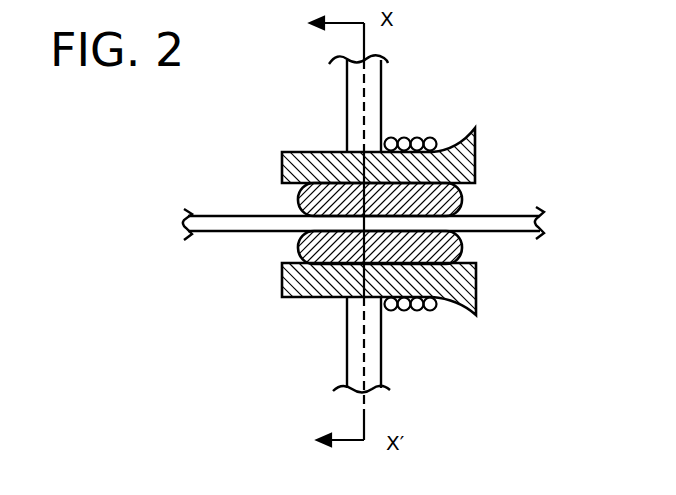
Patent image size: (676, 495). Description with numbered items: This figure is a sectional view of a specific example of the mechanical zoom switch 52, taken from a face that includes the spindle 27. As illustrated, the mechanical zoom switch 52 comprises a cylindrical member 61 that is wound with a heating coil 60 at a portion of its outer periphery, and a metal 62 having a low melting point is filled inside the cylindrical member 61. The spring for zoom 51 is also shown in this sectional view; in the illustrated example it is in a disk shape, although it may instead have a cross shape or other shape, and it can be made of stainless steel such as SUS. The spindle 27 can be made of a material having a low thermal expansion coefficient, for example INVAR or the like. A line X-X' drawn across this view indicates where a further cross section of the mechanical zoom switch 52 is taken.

The spindle 27 is at (216, 226).
The spring for zoom 51 is at (373, 360).
The mechanical zoom switch 52 is at (441, 88).
The heating coil 60 is at (432, 311).
The cylindrical member 61 is at (476, 157).
The metal having a low melting point 62 is at (462, 248).